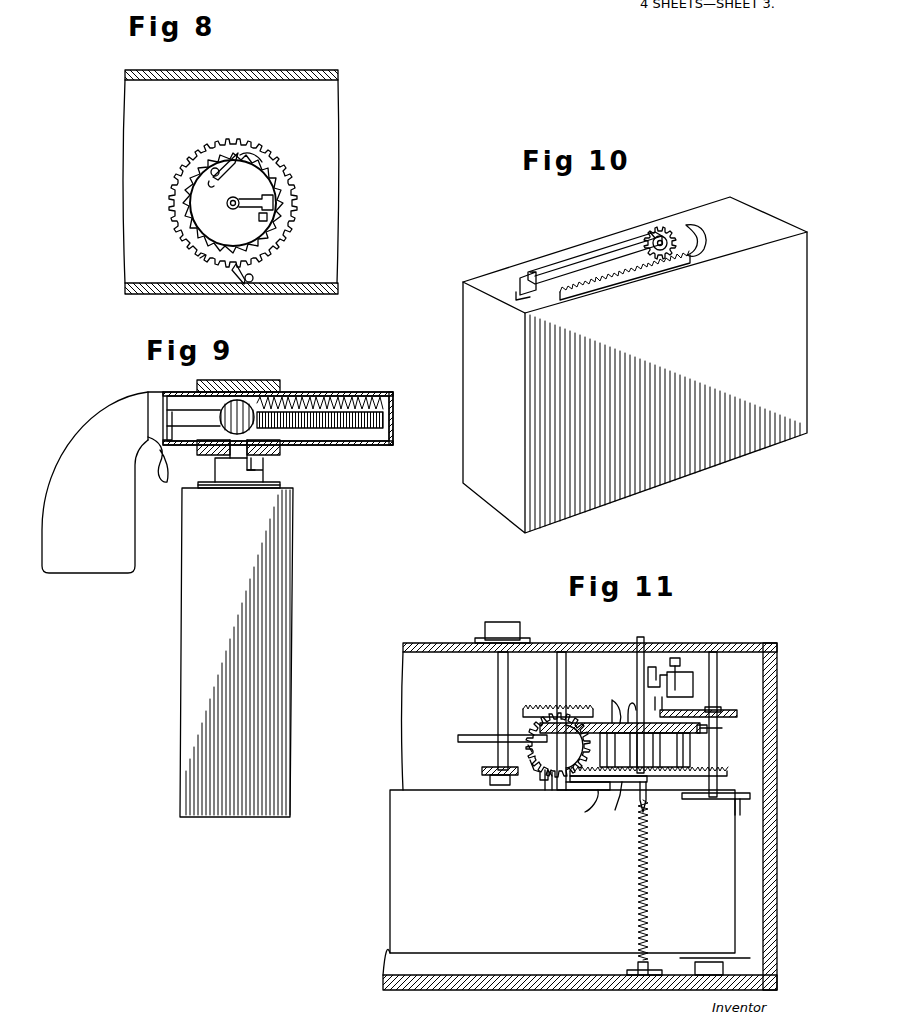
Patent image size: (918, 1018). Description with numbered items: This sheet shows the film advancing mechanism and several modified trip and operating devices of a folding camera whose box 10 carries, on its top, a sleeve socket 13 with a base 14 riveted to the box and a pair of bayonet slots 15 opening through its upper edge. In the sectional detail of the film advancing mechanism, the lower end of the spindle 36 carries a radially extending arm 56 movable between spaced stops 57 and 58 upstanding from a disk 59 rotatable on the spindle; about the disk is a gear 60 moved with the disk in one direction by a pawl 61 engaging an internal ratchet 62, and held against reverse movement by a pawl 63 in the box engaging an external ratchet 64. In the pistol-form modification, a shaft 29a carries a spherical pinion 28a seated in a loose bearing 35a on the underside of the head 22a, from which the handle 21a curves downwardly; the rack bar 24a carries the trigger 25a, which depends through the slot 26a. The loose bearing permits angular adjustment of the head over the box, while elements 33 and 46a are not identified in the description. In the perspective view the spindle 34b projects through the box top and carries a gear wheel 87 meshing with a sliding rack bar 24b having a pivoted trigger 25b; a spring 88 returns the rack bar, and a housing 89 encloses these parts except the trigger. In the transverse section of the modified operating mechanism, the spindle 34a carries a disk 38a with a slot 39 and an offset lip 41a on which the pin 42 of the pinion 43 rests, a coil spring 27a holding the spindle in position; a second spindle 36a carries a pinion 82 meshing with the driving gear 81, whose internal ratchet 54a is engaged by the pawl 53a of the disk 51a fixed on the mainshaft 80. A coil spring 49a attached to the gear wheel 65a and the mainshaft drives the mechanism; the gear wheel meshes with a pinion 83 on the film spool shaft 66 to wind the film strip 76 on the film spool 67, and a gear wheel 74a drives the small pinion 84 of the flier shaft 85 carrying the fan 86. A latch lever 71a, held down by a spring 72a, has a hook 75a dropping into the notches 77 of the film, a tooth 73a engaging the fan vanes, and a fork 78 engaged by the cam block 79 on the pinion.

In FIG. 8, the box 10 is at (325, 117).
In FIG. 9, the box 10 is at (236, 652).
In FIG. 10, the box 10 is at (635, 365).
In FIG. 11, the box 10 is at (765, 855).
In FIG. 11, the sleeve socket 13 is at (520, 624).
In FIG. 9, the base 14 is at (213, 488).
In FIG. 11, the base 14 is at (478, 639).
In FIG. 9, the bayonet slots 15 is at (247, 472).
In FIG. 9, the handle 21a is at (102, 482).
In FIG. 9, the head 22a is at (345, 392).
In FIG. 9, the rack bar 24a is at (348, 427).
In FIG. 10, the sliding rack bar 24b is at (636, 268).
In FIG. 9, the trigger 25a is at (158, 460).
In FIG. 10, the trigger 25b is at (705, 236).
In FIG. 9, the slot 26a is at (163, 437).
In FIG. 11, the coil spring 27a is at (485, 767).
In FIG. 9, the pinion 28a is at (225, 410).
In FIG. 9, the shaft 29a is at (228, 452).
In FIG. 9, the base 33 is at (282, 484).
In FIG. 11, the spindle 34a is at (498, 680).
In FIG. 10, the spindle 34b is at (668, 228).
In FIG. 9, the loose bearing 35a is at (262, 450).
In FIG. 8, the spindle 36 is at (226, 203).
In FIG. 11, the second spindle 36a is at (566, 680).
In FIG. 11, the disk 38a is at (470, 735).
In FIG. 11, the slot 39 is at (522, 752).
In FIG. 11, the lip 41a is at (545, 773).
In FIG. 11, the pin 42 is at (535, 742).
In FIG. 11, the pinion 43 is at (548, 775).
In FIG. 11, the rack 46a is at (590, 722).
In FIG. 11, the coil spring 49a is at (662, 757).
In FIG. 11, the disk 51a is at (633, 705).
In FIG. 11, the pawl 53a is at (613, 700).
In FIG. 11, the internal ratchet 54a is at (707, 729).
In FIG. 8, the radially extending arm 56 is at (247, 200).
In FIG. 8, the stop 57 is at (273, 200).
In FIG. 8, the stop 58 is at (268, 217).
In FIG. 8, the disk 59 is at (233, 203).
In FIG. 8, the gear 60 is at (278, 247).
In FIG. 8, the pawl 61 is at (222, 167).
In FIG. 8, the internal ratchet 62 is at (255, 158).
In FIG. 8, the pawl 63 is at (233, 282).
In FIG. 8, the external ratchet 64 is at (200, 257).
In FIG. 11, the gear wheel 65a is at (624, 784).
In FIG. 11, the film spool shaft 66 is at (722, 794).
In FIG. 11, the film spool 67 is at (740, 802).
In FIG. 11, the latch lever 71a is at (659, 706).
In FIG. 11, the spring 72a is at (650, 893).
In FIG. 11, the tooth 73a is at (655, 668).
In FIG. 11, the gear wheel 74a is at (720, 713).
In FIG. 11, the hook 75a is at (650, 802).
In FIG. 11, the film strip 76 is at (570, 882).
In FIG. 11, the notches 77 is at (648, 792).
In FIG. 11, the fork 78 is at (598, 790).
In FIG. 11, the cam block 79 is at (570, 790).
In FIG. 11, the mainshaft 80 is at (645, 650).
In FIG. 11, the driving gear 81 is at (707, 733).
In FIG. 11, the pinion 82 is at (545, 705).
In FIG. 11, the pinion 83 is at (728, 773).
In FIG. 11, the small pinion 84 is at (698, 705).
In FIG. 11, the flier shaft 85 is at (678, 660).
In FIG. 11, the fan 86 is at (685, 684).
In FIG. 10, the gear wheel 87 is at (650, 231).
In FIG. 10, the spring 88 is at (690, 262).
In FIG. 10, the housing 89 is at (585, 256).